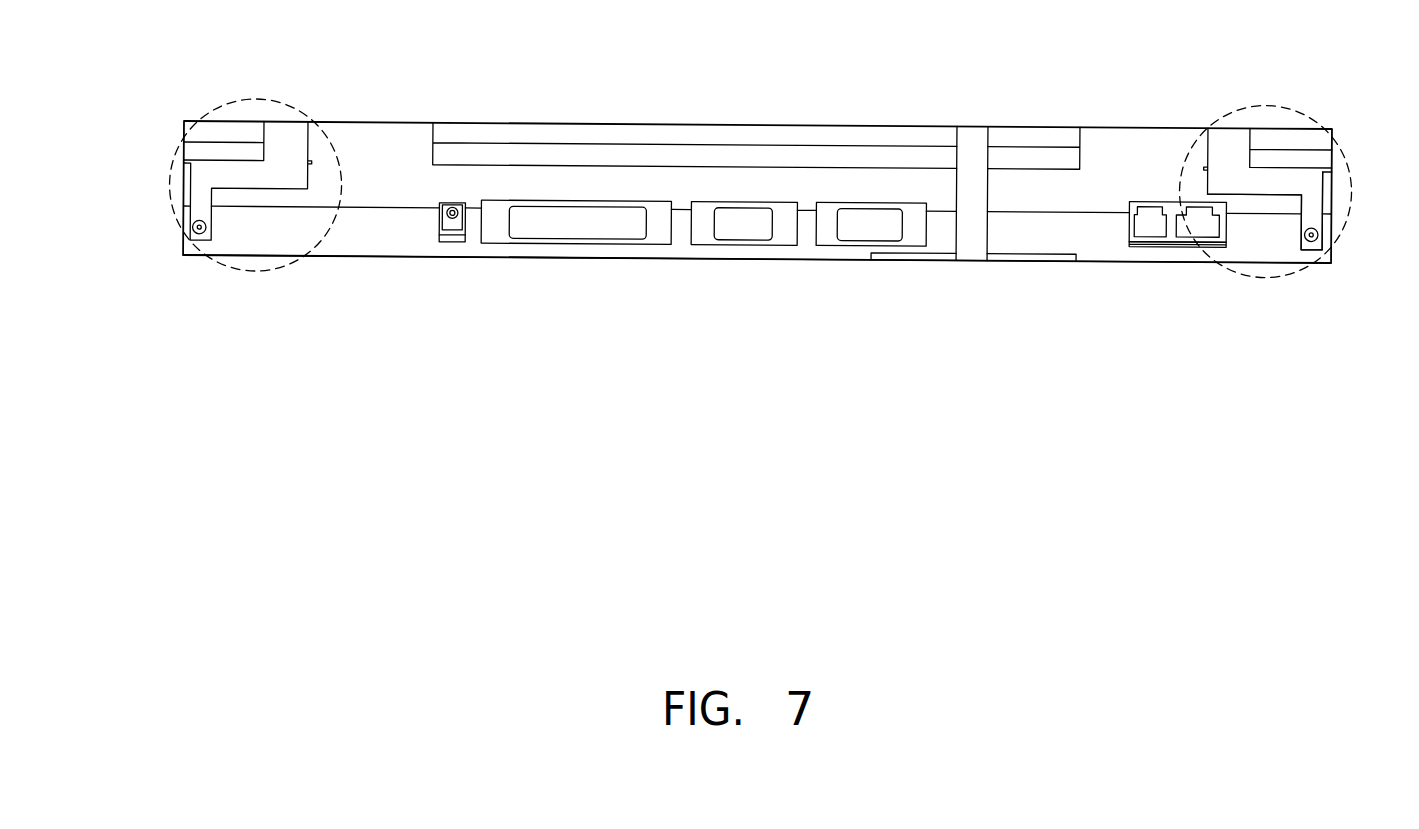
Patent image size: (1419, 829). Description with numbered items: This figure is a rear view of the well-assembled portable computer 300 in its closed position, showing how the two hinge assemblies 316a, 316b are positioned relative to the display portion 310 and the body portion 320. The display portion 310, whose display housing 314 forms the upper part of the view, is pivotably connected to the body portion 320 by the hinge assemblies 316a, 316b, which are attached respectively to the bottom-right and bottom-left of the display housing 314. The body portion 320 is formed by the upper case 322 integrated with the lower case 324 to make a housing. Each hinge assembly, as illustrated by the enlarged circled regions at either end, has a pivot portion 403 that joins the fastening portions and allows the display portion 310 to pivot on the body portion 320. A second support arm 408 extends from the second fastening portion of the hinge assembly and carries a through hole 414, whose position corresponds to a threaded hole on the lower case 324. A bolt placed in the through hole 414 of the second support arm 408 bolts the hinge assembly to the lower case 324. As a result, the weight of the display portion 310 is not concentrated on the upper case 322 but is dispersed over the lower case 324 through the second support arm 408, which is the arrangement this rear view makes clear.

The portable computer 300 is at (1208, 384).
The display portion 310 is at (158, 120).
The display housing 314 is at (1007, 126).
The hinge assembly 316a is at (289, 109).
The hinge assembly 316b is at (1225, 120).
The body portion 320 is at (158, 168).
The upper case 322 is at (410, 193).
The lower case 324 is at (357, 228).
The pivot portion 403 is at (1227, 143).
The second support arm 408 is at (1298, 180).
The through hole 414 is at (1320, 233).